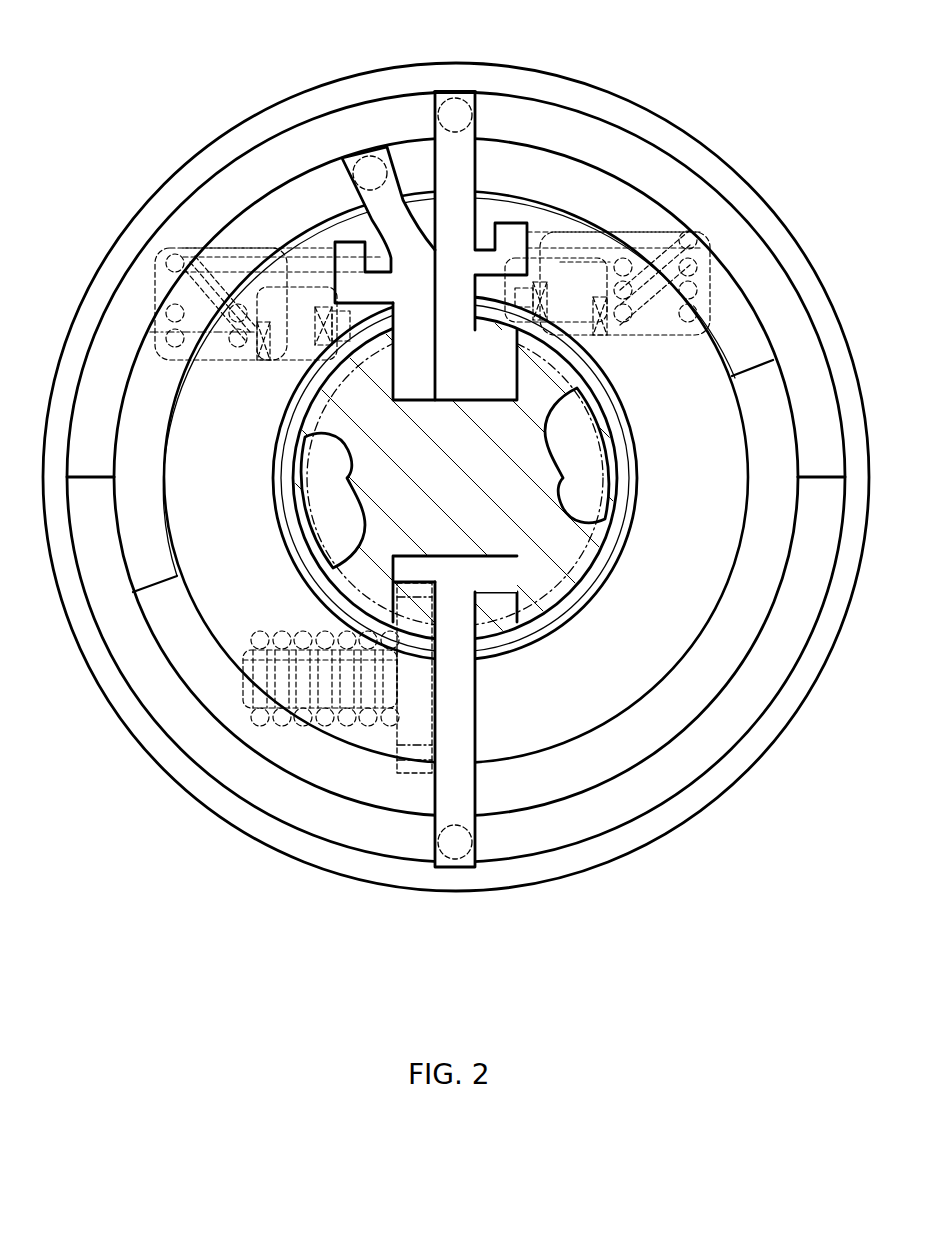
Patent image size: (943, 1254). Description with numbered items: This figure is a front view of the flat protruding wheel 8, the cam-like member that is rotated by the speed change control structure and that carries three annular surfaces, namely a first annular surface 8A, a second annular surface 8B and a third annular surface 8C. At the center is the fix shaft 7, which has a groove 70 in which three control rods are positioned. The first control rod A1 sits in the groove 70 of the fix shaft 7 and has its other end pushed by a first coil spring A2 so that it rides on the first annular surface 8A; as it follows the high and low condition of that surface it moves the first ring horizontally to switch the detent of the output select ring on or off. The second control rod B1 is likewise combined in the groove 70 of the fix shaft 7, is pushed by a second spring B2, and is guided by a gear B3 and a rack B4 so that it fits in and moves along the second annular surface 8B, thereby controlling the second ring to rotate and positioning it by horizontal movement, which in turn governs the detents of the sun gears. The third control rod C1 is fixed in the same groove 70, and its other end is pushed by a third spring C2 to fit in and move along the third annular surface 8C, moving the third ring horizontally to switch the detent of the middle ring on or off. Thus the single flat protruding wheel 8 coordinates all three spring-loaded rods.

The flat protruding wheel 8 is at (187, 147).
The first annular surface 8A is at (607, 198).
The second annular surface 8B is at (290, 810).
The third annular surface 8C is at (283, 148).
The fix shaft 7 is at (563, 540).
The groove 70 is at (393, 387).
The first control rod A1 is at (385, 152).
The first coil spring A2 is at (173, 248).
The second control rod B1 is at (465, 795).
The second spring B2 is at (258, 712).
The gear B3 is at (413, 732).
The rack B4 is at (392, 592).
The third control rod C1 is at (477, 158).
The third spring C2 is at (665, 265).